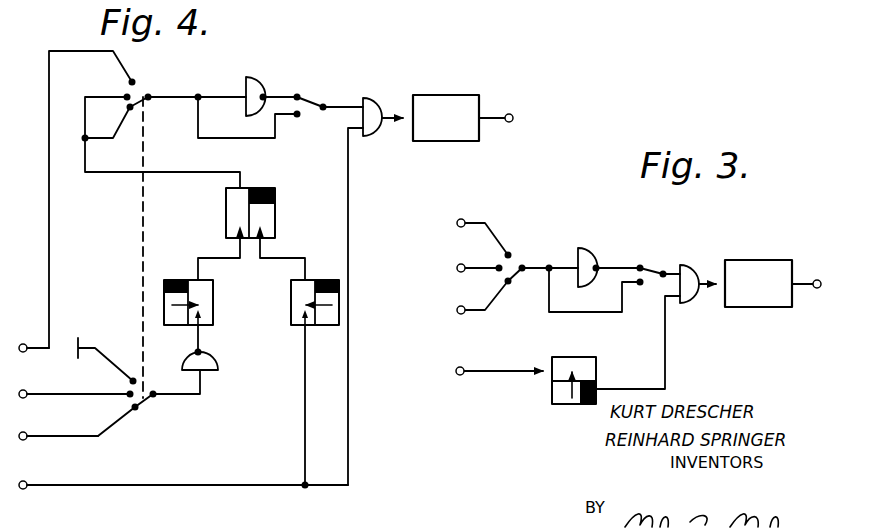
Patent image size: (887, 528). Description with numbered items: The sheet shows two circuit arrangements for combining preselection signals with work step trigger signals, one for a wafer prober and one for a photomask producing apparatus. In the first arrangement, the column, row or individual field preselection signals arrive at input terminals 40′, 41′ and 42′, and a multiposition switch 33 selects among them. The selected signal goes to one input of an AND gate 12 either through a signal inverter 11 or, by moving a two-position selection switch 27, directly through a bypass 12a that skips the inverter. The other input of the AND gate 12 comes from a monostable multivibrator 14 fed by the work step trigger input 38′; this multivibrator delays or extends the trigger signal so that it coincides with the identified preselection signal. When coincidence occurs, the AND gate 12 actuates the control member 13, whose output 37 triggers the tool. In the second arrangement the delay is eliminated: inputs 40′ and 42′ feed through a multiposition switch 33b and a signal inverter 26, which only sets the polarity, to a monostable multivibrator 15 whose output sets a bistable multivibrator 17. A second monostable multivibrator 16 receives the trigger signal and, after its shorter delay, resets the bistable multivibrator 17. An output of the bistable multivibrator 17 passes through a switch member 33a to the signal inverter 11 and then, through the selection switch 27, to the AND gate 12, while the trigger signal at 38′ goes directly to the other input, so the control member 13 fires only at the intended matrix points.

In FIG. 4, the signal inverter 11 is at (265, 95).
In FIG. 3, the signal inverter 11 is at (591, 258).
In FIG. 4, the AND gate 12 is at (377, 106).
In FIG. 3, the AND gate 12 is at (690, 265).
In FIG. 4, the bypass 12a is at (253, 138).
In FIG. 3, the bypass 12a is at (598, 312).
In FIG. 4, the control member 13 is at (446, 118).
In FIG. 3, the control member 13 is at (758, 283).
In FIG. 3, the monostable multivibrator 14 is at (552, 365).
In FIG. 4, the monostable multivibrator 15 is at (213, 305).
In FIG. 4, the second monostable multivibrator 16 is at (291, 305).
In FIG. 4, the bistable multivibrator 17 is at (275, 218).
In FIG. 4, the signal inverter 26 is at (218, 356).
In FIG. 4, the selection switch 27 is at (315, 98).
In FIG. 3, the selection switch 27 is at (648, 263).
In FIG. 3, the multiposition switch 33 is at (522, 268).
In FIG. 4, the switch member 33a is at (135, 97).
In FIG. 4, the multiposition switch 33b is at (148, 398).
In FIG. 4, the output 37 is at (512, 114).
In FIG. 3, the output 37 is at (816, 280).
In FIG. 4, the input 38′ is at (26, 481).
In FIG. 3, the input 38′ is at (457, 374).
In FIG. 4, the input terminal 40′ is at (26, 390).
In FIG. 3, the input terminal 40′ is at (457, 268).
In FIG. 4, the input terminal 41′ is at (28, 344).
In FIG. 3, the input terminal 41′ is at (457, 224).
In FIG. 4, the input terminal 42′ is at (26, 432).
In FIG. 3, the input terminal 42′ is at (457, 310).